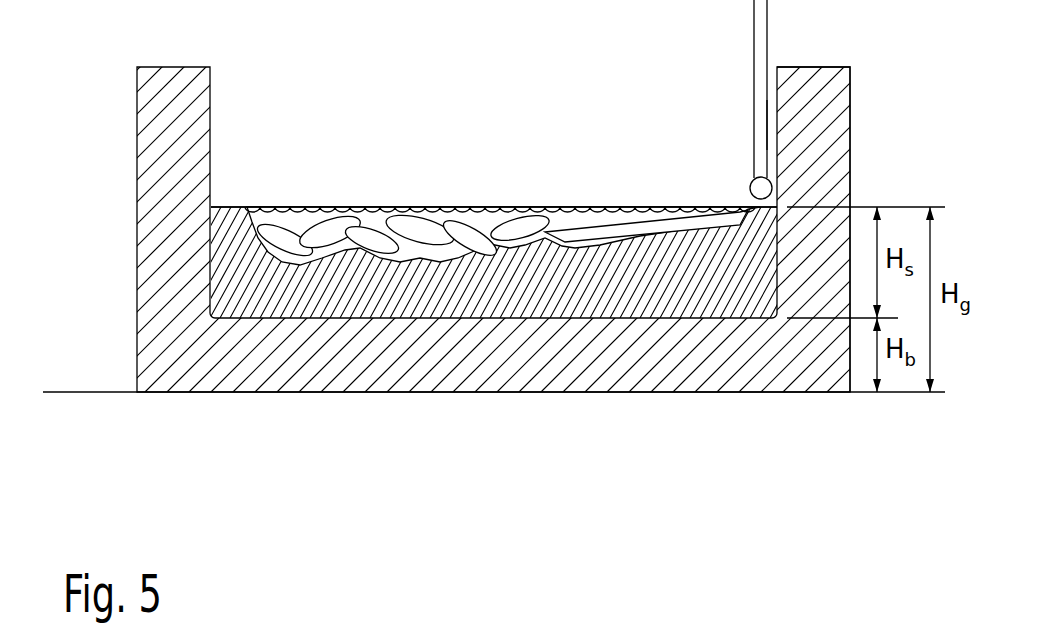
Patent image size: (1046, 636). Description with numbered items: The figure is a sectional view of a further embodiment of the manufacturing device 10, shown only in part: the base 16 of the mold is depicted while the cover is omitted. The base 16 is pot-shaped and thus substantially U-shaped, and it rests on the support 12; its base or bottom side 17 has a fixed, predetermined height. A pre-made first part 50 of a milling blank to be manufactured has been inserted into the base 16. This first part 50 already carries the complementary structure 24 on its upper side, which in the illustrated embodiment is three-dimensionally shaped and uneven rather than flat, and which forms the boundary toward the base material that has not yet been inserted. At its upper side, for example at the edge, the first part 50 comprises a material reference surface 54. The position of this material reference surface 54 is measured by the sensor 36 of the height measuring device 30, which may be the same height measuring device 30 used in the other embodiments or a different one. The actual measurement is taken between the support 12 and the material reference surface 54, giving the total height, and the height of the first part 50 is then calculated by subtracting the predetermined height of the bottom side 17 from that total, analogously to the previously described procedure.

The manufacturing device 10 is at (208, 446).
The support 12 is at (77, 388).
The base 16 is at (808, 372).
The base or bottom side 17 is at (573, 372).
The complementary structure 24 is at (434, 226).
The height measuring device 30 is at (753, 42).
The sensor 36 is at (762, 122).
The first part 50 is at (480, 300).
The material reference surface 54 is at (744, 196).